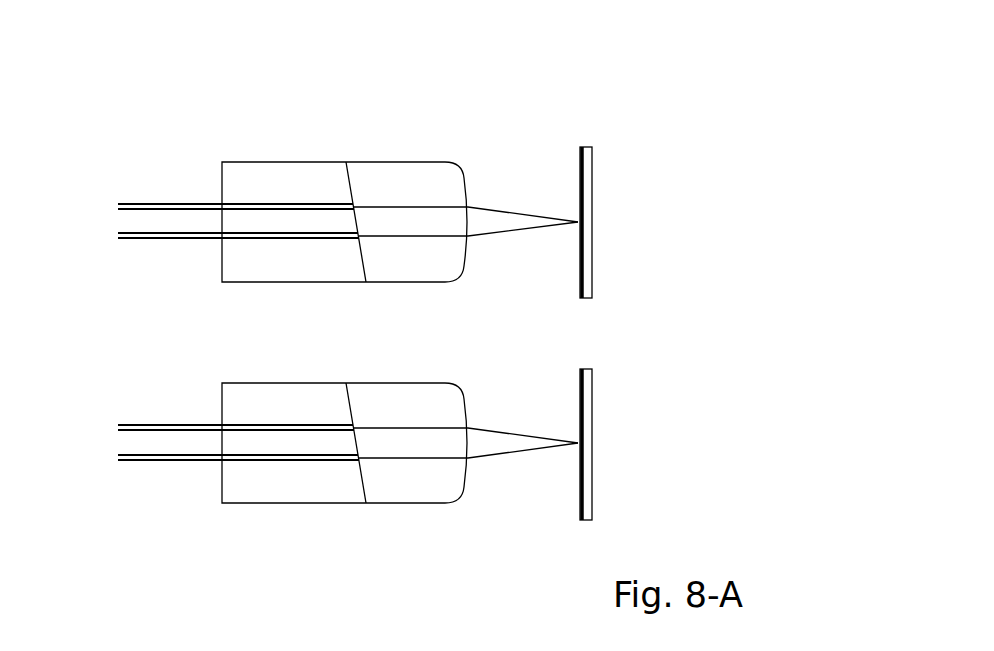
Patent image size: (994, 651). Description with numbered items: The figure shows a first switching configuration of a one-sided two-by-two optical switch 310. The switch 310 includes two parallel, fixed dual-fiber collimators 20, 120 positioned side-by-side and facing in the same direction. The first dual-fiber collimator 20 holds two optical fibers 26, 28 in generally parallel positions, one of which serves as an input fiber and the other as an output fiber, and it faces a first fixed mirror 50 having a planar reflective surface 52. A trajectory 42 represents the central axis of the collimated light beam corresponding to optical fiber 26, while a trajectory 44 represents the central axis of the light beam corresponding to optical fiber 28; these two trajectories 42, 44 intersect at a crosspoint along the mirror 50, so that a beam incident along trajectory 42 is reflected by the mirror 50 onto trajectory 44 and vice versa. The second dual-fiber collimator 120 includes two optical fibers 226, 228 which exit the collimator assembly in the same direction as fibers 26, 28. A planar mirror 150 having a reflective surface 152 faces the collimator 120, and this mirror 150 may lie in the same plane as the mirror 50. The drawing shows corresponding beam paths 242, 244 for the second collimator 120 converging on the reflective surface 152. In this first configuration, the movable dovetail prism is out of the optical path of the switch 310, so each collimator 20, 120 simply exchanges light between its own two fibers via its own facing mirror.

The first input/output dual-fiber collimator 20 is at (340, 106).
The optical fiber 26 is at (160, 202).
The optical fiber 28 is at (155, 240).
The trajectory 42 is at (440, 205).
The trajectory 44 is at (450, 240).
The first fixed mirror 50 is at (588, 134).
The planar reflective surface 52 is at (577, 188).
The one-sided 2×2 optical switch 310 is at (714, 92).
The dual-fiber collimator 120 is at (307, 535).
The optical fiber 228 is at (162, 422).
The optical fiber 226 is at (162, 462).
The third collimated beam 242 is at (441, 428).
The fourth collimated beam 244 is at (438, 461).
The planar mirror 150 is at (591, 361).
The reflective surface 152 is at (577, 483).